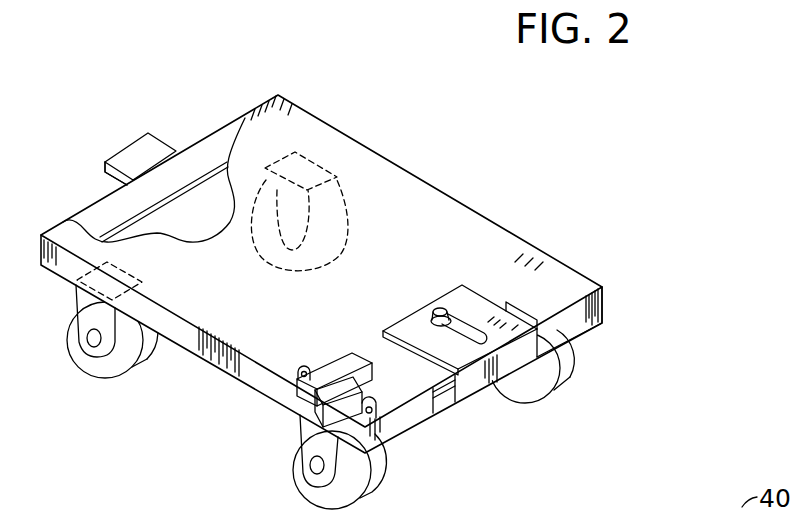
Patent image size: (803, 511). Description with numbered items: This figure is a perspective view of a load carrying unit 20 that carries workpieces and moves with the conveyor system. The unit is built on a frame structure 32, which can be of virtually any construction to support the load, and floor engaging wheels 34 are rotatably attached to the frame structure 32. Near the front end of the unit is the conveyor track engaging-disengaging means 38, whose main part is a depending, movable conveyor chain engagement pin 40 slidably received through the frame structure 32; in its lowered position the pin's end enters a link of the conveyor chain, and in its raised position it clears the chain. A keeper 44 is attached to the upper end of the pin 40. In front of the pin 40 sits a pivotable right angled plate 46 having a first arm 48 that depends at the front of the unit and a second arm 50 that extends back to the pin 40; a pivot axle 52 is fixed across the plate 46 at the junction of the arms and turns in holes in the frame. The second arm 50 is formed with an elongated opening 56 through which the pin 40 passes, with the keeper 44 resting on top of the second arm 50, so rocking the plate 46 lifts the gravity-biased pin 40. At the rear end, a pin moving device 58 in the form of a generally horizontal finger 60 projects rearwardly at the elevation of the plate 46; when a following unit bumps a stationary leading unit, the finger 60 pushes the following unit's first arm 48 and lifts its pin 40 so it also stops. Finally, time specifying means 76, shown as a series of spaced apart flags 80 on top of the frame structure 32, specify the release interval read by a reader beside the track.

The load carrying unit 20 is at (480, 172).
The frame structure 32 is at (492, 227).
The floor engaging wheels 34 is at (102, 368).
The conveyor track engaging-disengaging means 38 is at (568, 320).
The conveyor chain engagement pin 40 is at (436, 307).
The keeper 44 is at (430, 303).
The pivotable right angled plate 46 is at (512, 368).
The first arm 48 is at (480, 397).
The second arm 50 is at (485, 307).
The pivot axle 52 is at (447, 393).
The elongated opening 56 is at (410, 313).
The pin moving device 58 is at (122, 141).
The horizontal finger 60 is at (162, 148).
The time specifying means 76 is at (257, 447).
The flags 80 is at (357, 357).